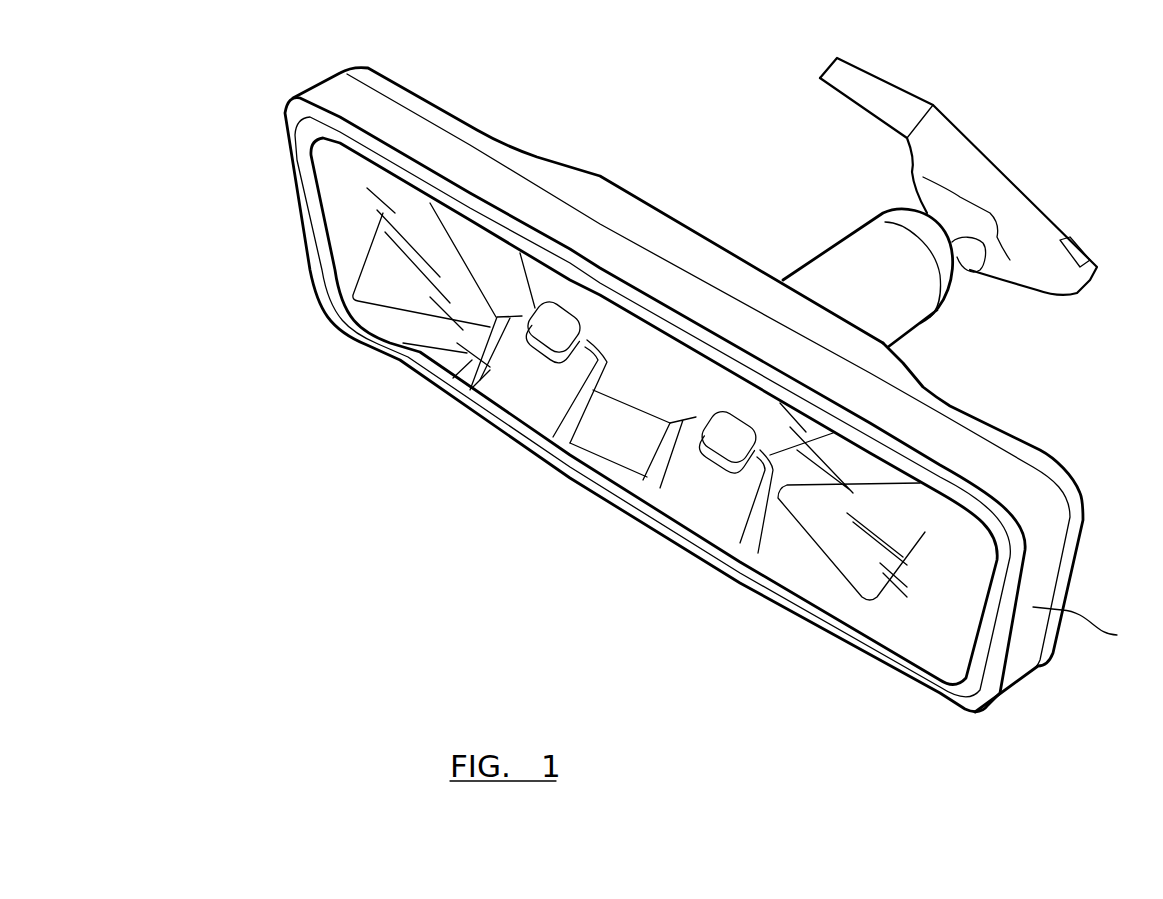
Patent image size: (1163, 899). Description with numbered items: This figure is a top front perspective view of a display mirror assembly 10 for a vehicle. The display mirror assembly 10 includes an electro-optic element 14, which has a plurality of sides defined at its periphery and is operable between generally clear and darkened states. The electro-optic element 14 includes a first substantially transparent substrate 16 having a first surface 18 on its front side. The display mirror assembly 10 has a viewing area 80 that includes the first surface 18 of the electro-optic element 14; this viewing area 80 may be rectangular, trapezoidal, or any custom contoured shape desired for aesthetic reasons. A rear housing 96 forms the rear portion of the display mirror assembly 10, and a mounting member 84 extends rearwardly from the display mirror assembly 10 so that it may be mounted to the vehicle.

The display mirror assembly 10 is at (228, 60).
The electro-optic element 14 is at (402, 328).
The first substantially transparent substrate 16 is at (585, 420).
The first surface 18 is at (617, 440).
The viewing area 80 is at (779, 519).
The mounting member 84 is at (857, 285).
The rear housing 96 is at (1090, 630).